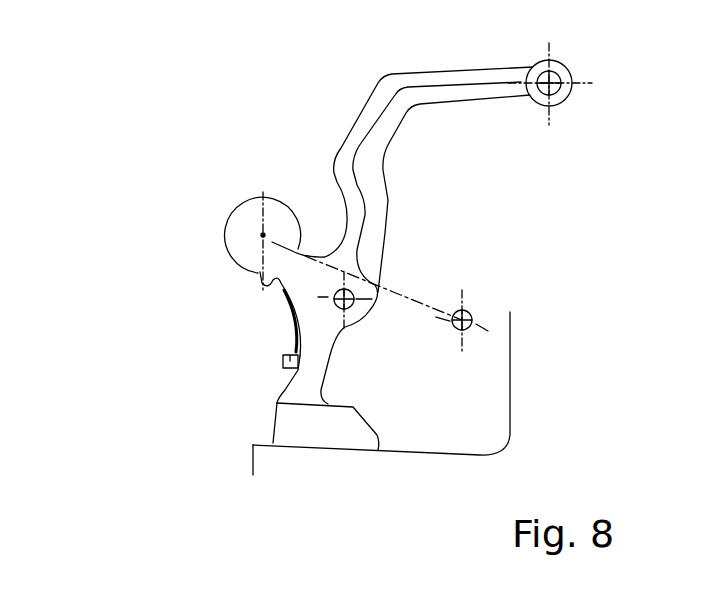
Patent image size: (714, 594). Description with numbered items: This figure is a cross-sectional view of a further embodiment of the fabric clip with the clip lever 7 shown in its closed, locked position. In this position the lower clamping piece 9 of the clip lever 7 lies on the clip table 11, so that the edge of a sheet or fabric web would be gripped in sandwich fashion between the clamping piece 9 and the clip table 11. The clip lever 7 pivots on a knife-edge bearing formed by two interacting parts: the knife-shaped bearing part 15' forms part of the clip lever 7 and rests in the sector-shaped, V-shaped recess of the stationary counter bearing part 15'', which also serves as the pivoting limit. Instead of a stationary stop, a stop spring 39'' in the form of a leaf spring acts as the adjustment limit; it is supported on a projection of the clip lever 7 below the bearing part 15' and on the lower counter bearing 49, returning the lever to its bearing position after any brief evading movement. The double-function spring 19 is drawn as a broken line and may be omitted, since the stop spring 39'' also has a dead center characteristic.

The clip lever 7 is at (380, 238).
The clamping piece 9 is at (357, 430).
The clip table 11 is at (323, 463).
The knife-shaped bearing part 15' is at (194, 234).
The counter bearing part 15'' is at (167, 141).
The double-function spring 19 is at (416, 312).
The stop spring 39'' is at (177, 299).
The counter bearing 49 is at (285, 358).